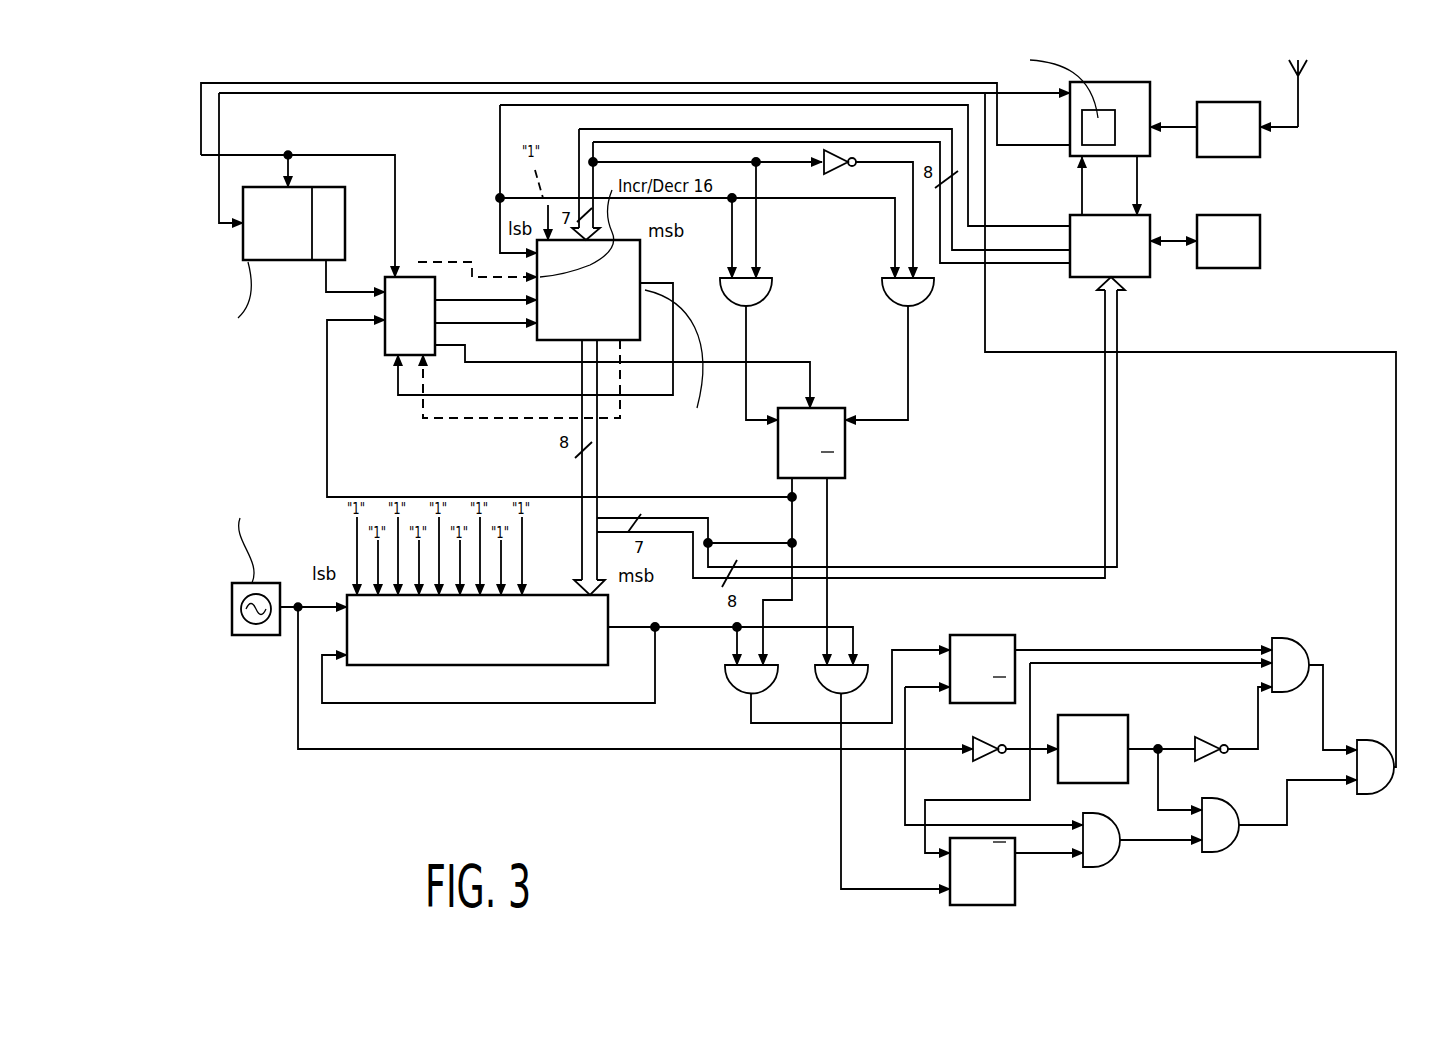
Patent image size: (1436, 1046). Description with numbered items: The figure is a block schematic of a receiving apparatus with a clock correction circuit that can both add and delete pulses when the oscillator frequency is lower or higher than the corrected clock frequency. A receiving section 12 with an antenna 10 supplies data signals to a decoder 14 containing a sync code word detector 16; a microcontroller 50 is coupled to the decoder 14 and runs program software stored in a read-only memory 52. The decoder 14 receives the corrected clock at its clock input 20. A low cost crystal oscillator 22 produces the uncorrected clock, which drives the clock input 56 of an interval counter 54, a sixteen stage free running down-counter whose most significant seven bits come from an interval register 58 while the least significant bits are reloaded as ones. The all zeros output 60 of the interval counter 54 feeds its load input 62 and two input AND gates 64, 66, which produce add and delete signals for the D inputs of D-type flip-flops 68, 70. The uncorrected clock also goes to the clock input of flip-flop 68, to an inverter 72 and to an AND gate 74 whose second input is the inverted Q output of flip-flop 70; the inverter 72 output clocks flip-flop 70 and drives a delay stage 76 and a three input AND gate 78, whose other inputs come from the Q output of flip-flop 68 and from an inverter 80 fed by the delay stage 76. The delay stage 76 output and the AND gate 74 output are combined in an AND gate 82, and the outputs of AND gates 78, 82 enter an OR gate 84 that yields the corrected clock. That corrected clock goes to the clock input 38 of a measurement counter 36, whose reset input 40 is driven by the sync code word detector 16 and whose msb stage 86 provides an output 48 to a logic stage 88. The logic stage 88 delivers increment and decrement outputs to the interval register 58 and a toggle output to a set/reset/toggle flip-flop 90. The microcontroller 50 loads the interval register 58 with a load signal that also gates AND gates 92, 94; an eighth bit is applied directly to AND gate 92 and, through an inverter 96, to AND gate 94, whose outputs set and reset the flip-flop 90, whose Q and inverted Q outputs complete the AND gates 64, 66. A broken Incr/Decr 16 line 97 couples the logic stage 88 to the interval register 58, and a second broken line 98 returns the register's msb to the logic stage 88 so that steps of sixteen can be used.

The antenna 10 is at (1300, 112).
The receiving section 12 is at (1240, 157).
The decoder 14 is at (1125, 82).
The sync code word detector 16 is at (1103, 140).
The clock input 20 is at (1062, 98).
The crystal oscillator 22 is at (262, 635).
The measurement counter 36 is at (273, 262).
The clock input 38 is at (242, 232).
The reset input 40 is at (300, 186).
The output 48 is at (320, 284).
The microcontroller 50 is at (1135, 277).
The read-only memory 52 is at (1240, 268).
The interval counter 54 is at (556, 595).
The clock input 56 is at (348, 612).
The interval register 58 is at (640, 272).
The all zeros output 60 is at (607, 630).
The load input 62 is at (350, 660).
The AND gate 64 is at (725, 686).
The AND gate 66 is at (868, 673).
The D-type flip-flop 68 is at (990, 636).
The D-type flip-flop 70 is at (1015, 895).
The inverter 72 is at (984, 762).
The AND gate 74 is at (1107, 862).
The delay stage 76 is at (1125, 712).
The AND gate 78 is at (1304, 652).
The inverter 80 is at (1208, 740).
The AND gate 82 is at (1226, 850).
The OR gate 84 is at (1385, 786).
The msb stage 86 is at (345, 231).
The logic stage 88 is at (382, 345).
The set/reset/toggle flip-flop 90 is at (845, 460).
The AND gate 92 is at (772, 293).
The AND gate 94 is at (885, 298).
The inverter 96 is at (837, 176).
The Incr/Decr 16 line 97 is at (438, 256).
The optional connection line 98 is at (488, 420).